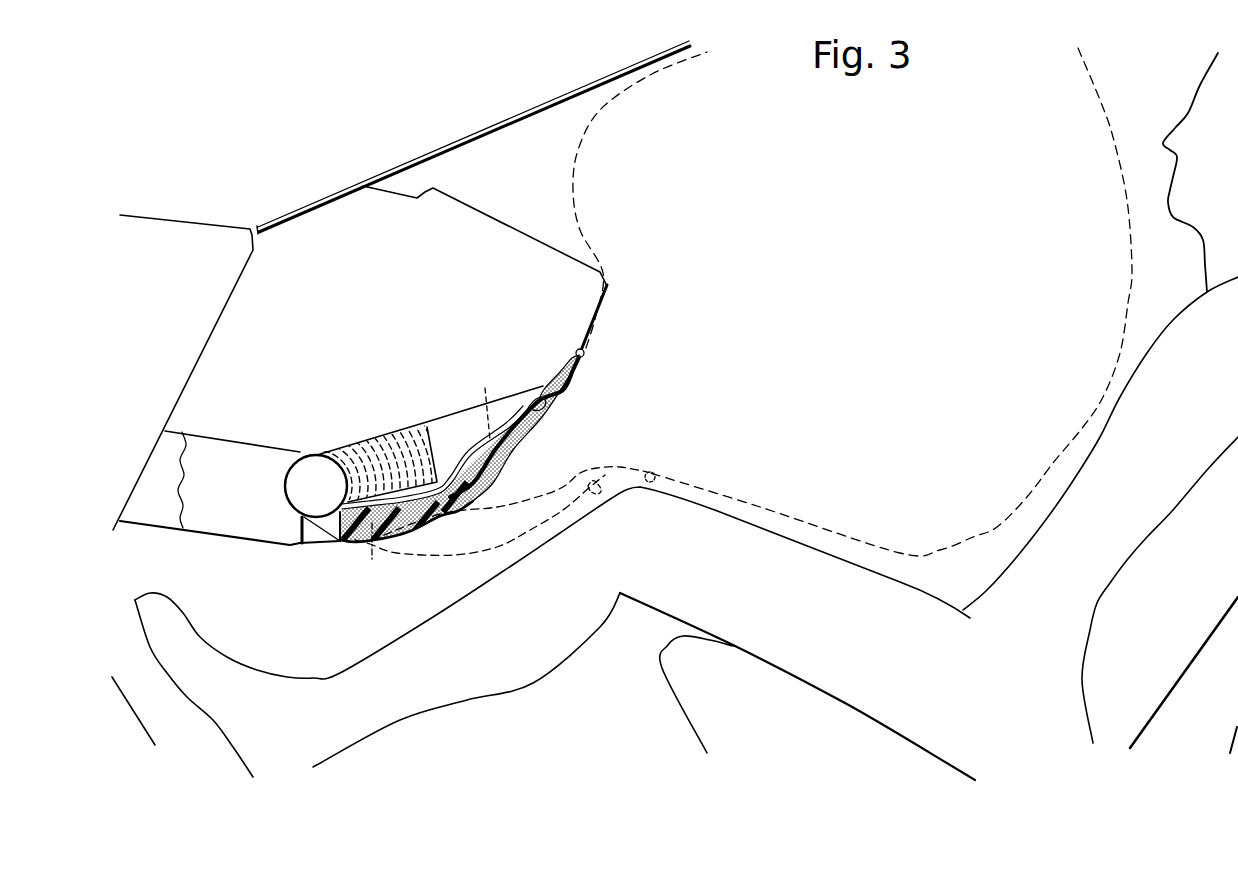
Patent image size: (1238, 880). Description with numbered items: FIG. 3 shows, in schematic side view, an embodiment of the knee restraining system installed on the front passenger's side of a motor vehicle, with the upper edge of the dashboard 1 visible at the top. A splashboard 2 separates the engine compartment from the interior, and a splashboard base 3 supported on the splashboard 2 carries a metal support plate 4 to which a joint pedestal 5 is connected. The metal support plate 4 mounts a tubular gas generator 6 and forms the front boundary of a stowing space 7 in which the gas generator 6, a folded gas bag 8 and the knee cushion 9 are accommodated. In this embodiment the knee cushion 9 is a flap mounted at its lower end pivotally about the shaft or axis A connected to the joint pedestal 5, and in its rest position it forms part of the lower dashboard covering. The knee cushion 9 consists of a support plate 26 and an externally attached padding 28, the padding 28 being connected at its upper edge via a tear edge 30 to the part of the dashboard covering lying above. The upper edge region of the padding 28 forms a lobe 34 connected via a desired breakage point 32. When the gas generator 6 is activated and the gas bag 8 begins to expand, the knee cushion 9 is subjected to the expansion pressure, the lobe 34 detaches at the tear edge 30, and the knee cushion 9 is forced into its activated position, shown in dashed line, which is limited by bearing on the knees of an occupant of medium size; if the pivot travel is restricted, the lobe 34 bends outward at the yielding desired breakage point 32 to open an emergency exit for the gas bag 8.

The upper edge of the dashboard 1 is at (609, 286).
The splashboard 2 is at (208, 336).
The splashboard base 3 is at (230, 488).
The metal support plate 4 is at (284, 481).
The joint pedestal 5 is at (328, 520).
The tubular gas generator 6 is at (300, 498).
The stowing space 7 is at (442, 430).
The gas bag 8 is at (573, 172).
The knee cushion 9 is at (550, 422).
The support plate 26 is at (476, 450).
The padding 28 is at (410, 532).
The tear edge 30 is at (585, 353).
The desired breakage point 32 is at (542, 398).
The lobe 34 is at (570, 357).
The shaft A is at (361, 552).